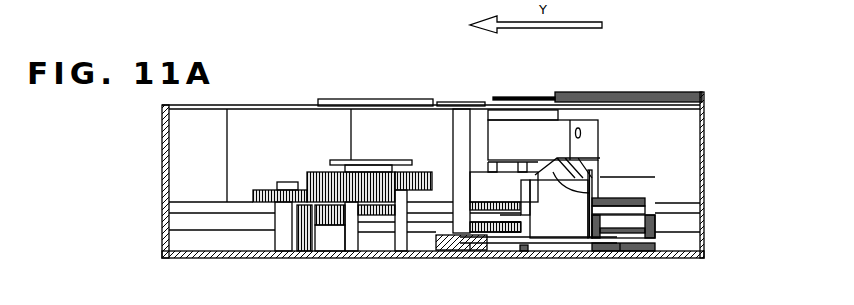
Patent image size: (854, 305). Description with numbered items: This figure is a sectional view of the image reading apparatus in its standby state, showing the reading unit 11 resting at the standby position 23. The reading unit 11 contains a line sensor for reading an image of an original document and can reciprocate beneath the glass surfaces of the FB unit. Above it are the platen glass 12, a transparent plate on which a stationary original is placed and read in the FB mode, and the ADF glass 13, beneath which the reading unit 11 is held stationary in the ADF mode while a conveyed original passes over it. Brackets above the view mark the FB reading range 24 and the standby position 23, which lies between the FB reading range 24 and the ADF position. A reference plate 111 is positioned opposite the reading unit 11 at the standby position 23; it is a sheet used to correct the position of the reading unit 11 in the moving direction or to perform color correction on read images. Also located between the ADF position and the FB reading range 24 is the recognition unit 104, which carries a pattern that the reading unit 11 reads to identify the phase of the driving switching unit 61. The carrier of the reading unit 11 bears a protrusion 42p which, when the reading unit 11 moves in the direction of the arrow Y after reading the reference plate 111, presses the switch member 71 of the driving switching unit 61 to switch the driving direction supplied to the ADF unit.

The reading unit 11 is at (627, 128).
The platen glass 12 is at (697, 97).
The ADF glass 13 is at (362, 98).
The recognition unit 104 is at (445, 101).
The reference plate 111 is at (512, 102).
The standby position 23 is at (603, 85).
The FB reading range 24 is at (617, 85).
The protrusion 42p is at (597, 170).
The switch member 71 is at (595, 193).
The driving switching unit 61 is at (565, 228).